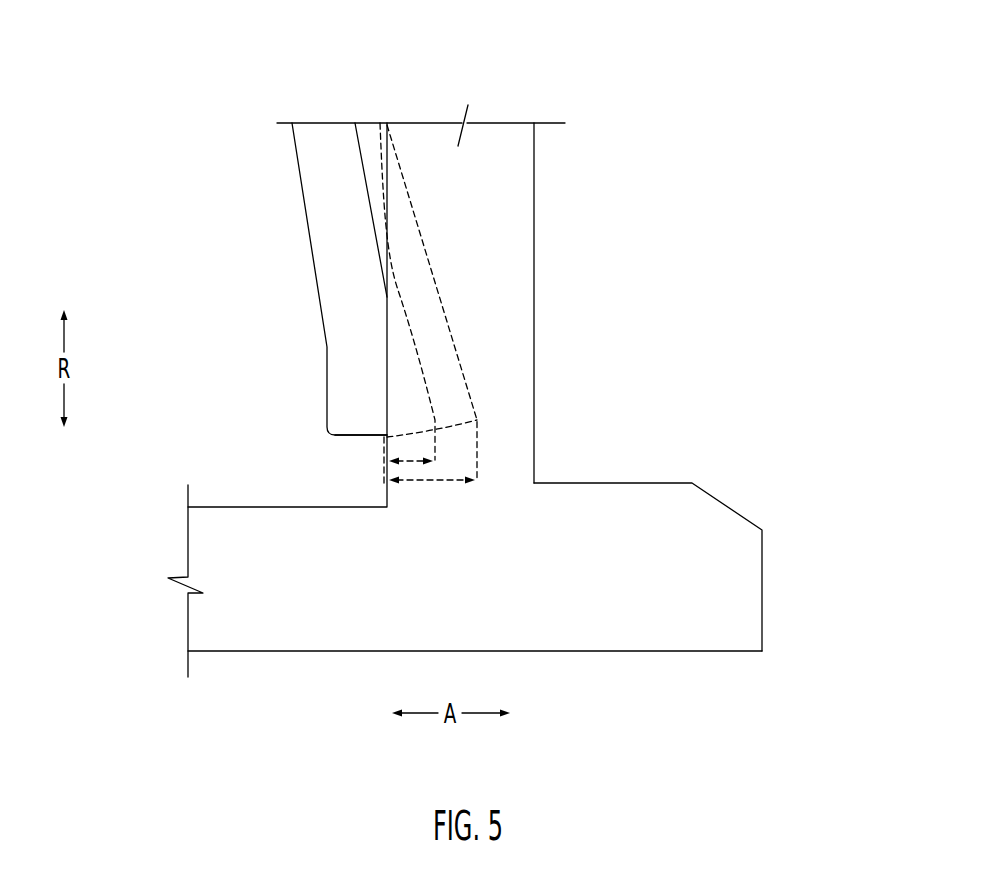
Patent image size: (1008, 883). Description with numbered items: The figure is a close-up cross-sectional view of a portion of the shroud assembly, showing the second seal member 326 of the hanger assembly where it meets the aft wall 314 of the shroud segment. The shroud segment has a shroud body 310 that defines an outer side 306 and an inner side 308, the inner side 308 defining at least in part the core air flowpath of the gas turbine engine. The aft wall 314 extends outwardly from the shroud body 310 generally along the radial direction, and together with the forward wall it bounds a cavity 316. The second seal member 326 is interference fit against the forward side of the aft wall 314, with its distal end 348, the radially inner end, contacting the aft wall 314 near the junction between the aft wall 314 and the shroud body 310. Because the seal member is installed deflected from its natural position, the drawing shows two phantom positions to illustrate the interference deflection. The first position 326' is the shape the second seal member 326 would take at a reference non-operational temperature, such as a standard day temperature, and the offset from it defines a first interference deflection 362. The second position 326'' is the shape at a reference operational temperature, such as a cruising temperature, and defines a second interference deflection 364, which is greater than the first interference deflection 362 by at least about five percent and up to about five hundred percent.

The aft wall 314 is at (517, 145).
The outer side 306 is at (240, 503).
The shroud body 310 is at (273, 608).
The inner side 308 is at (307, 660).
The second seal member 326 is at (292, 279).
The first position of the second seal member 326' is at (448, 304).
The second position of the second seal member 326'' is at (492, 301).
The cavity 316 is at (270, 371).
The distal end 348 is at (343, 445).
The first interference deflection 362 is at (410, 463).
The second interference deflection 364 is at (457, 483).